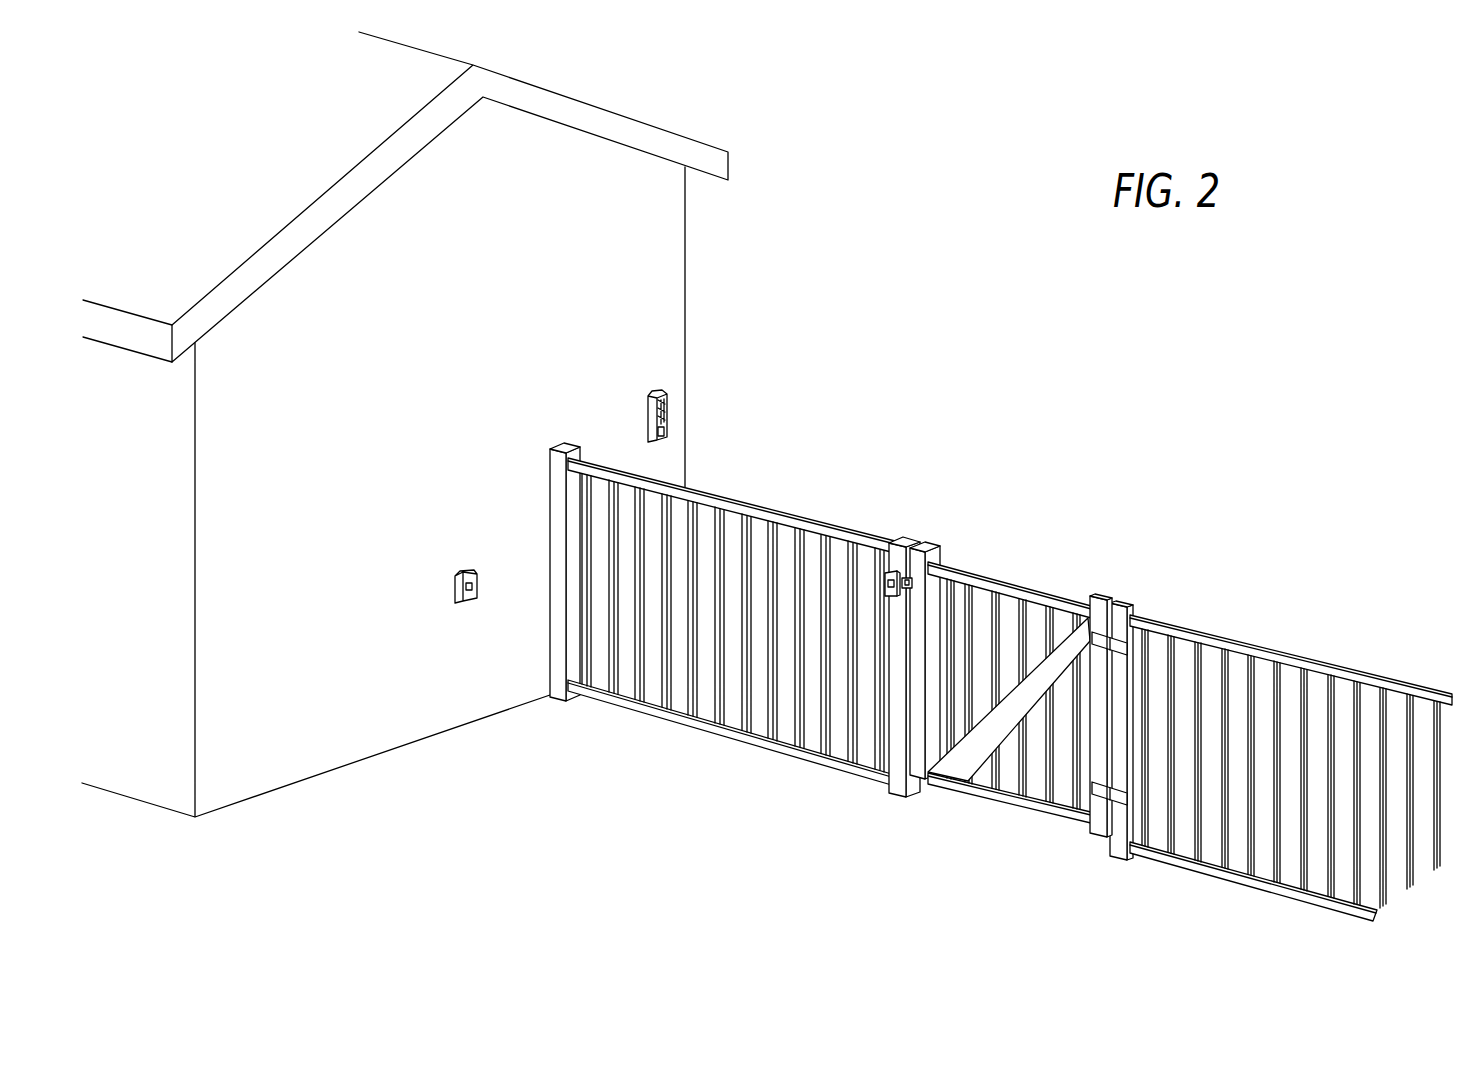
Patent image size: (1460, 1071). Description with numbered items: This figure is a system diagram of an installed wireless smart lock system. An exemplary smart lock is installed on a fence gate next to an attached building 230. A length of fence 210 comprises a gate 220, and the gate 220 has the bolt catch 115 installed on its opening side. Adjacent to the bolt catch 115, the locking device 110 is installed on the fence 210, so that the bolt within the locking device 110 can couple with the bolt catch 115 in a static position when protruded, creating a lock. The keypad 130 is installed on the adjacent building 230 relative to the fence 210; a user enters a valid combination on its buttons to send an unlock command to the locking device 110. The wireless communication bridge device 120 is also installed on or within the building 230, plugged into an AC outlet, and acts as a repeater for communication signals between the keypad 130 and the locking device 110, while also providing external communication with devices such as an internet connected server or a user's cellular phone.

The locking device 110 is at (884, 583).
The bolt catch 115 is at (913, 585).
The wireless communication bridge device 120 is at (458, 589).
The keypad 130 is at (667, 412).
The fence 210 is at (738, 505).
The gate 220 is at (1017, 587).
The building 230 is at (647, 122).